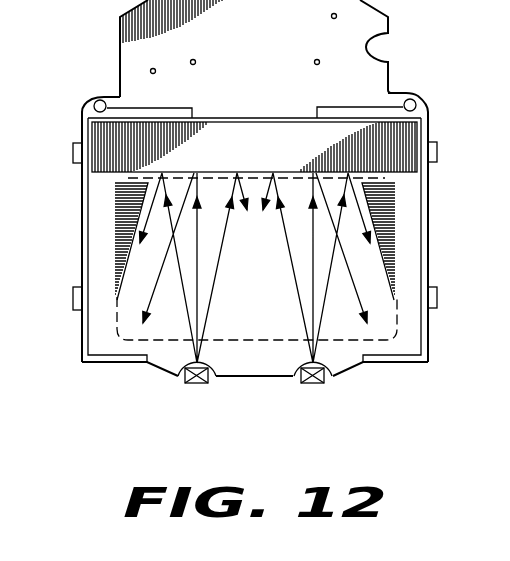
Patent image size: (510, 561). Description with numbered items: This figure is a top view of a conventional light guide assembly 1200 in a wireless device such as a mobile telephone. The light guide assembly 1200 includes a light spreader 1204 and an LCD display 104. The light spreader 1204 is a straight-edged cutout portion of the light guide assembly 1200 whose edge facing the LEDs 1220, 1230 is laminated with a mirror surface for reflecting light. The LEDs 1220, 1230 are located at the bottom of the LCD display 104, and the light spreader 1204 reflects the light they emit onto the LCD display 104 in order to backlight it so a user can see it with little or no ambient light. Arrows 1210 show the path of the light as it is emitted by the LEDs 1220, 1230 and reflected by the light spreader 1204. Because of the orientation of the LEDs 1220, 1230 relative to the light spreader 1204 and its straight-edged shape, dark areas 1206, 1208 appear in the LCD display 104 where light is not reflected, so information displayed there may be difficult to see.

The light guide assembly 1200 is at (128, 438).
The LCD display 104 is at (405, 343).
The light spreader 1204 is at (257, 134).
The dark area 1206 is at (130, 221).
The dark area 1208 is at (383, 220).
The arrows 1210 is at (278, 259).
The LED 1220 is at (197, 385).
The LED 1230 is at (312, 385).